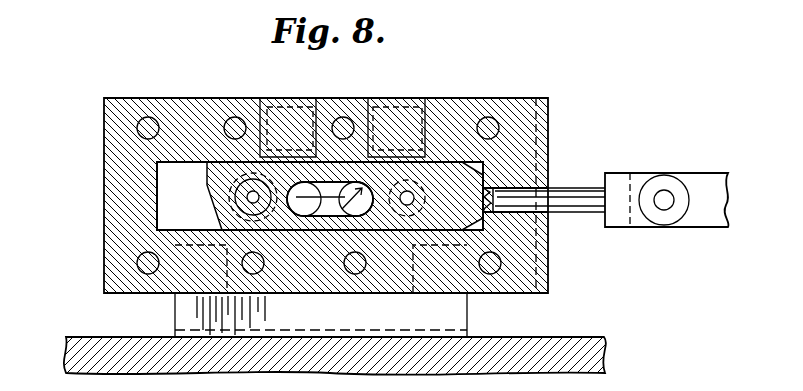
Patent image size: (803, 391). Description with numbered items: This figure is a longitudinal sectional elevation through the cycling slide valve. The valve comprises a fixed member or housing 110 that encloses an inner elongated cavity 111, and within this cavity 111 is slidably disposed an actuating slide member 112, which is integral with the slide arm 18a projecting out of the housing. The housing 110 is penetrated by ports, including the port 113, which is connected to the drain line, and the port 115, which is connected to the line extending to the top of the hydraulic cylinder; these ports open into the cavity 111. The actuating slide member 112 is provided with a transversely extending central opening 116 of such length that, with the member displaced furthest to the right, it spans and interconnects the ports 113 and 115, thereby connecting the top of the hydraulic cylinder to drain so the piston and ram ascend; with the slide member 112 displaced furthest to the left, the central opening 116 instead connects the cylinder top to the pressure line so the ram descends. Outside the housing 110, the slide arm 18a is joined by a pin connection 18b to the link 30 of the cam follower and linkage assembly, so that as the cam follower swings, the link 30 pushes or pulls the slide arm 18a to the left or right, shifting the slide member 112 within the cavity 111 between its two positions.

The housing 110 is at (103, 148).
The cavity 111 is at (165, 198).
The actuating slide member 112 is at (443, 165).
The port 113 is at (398, 96).
The port 115 is at (285, 96).
The central opening 116 is at (330, 214).
The slide arm 18a is at (566, 193).
The pin connection 18b is at (662, 190).
The link 30 is at (700, 219).